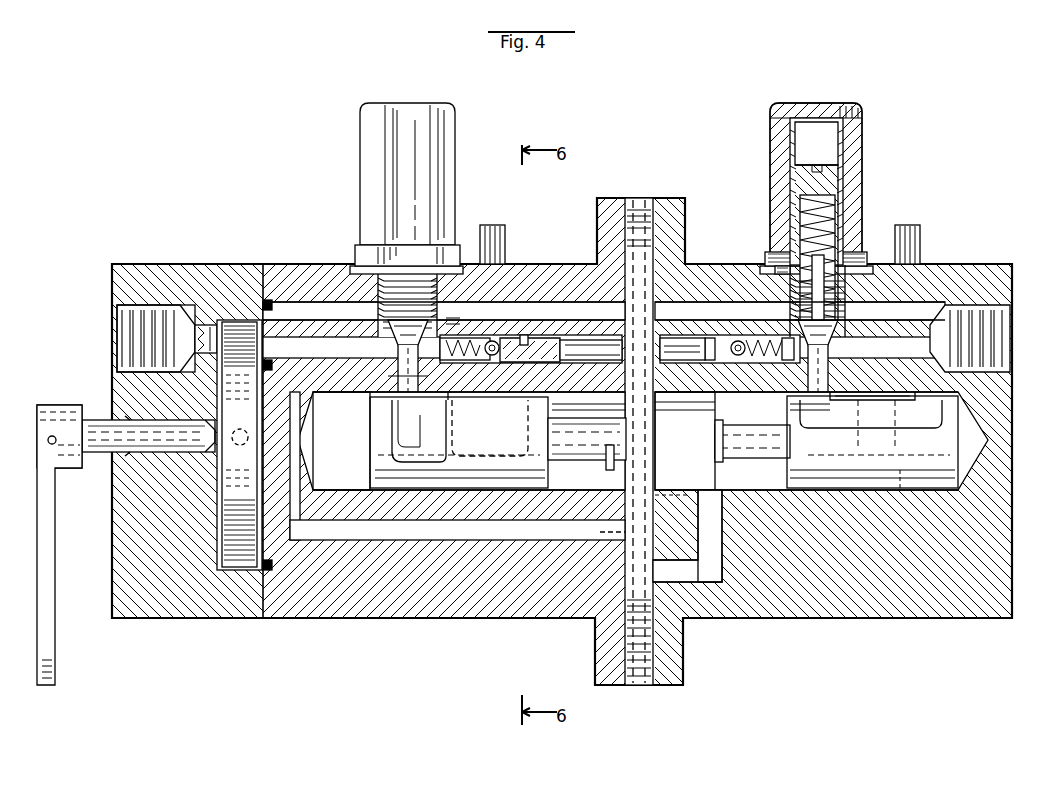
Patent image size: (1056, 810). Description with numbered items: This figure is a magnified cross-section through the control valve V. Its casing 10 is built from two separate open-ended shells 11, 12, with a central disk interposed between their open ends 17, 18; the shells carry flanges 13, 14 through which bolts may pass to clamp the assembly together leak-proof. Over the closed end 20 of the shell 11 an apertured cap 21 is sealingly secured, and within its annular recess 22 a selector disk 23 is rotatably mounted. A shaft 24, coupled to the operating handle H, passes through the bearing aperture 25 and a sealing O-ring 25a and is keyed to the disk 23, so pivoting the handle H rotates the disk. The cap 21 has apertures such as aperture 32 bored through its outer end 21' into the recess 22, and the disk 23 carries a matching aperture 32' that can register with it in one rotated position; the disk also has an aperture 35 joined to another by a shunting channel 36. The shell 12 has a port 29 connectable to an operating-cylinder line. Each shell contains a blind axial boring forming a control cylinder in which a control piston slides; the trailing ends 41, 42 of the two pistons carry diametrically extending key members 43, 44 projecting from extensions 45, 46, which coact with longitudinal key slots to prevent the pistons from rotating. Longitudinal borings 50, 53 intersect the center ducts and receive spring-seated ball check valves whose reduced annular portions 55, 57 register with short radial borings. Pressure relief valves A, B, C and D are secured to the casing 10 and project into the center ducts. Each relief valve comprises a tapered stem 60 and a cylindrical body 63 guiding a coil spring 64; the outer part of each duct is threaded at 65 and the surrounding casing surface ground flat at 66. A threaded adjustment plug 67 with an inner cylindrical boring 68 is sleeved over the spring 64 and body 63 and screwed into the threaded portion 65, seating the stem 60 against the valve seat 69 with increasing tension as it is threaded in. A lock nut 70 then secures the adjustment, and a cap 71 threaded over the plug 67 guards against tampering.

The casing 10 is at (150, 268).
The shell 11 is at (352, 622).
The shell 12 is at (895, 622).
The flange 13 is at (597, 657).
The flange 14 is at (681, 653).
The open end 17 is at (625, 200).
The open end 18 is at (668, 200).
The closed end 20 is at (262, 580).
The cap 21 is at (126, 629).
The outer end 21' is at (92, 549).
The annular recess 22 is at (222, 520).
The selector disk 23 is at (238, 540).
The shaft 24 is at (96, 424).
The bearing aperture 25 is at (175, 455).
The sealing O-ring 25a is at (128, 418).
The port 29 is at (985, 326).
The aperture 32 is at (133, 337).
The aperture 32' is at (219, 317).
The aperture 35 is at (218, 455).
The shunting channel 36 is at (240, 428).
The trailing end 41 is at (552, 492).
The trailing end 42 is at (785, 488).
The key member 43 is at (608, 472).
The key member 44 is at (722, 474).
The extension 45 is at (580, 452).
The extension 46 is at (746, 460).
The longitudinal boring 50 is at (580, 362).
The longitudinal boring 53 is at (680, 362).
The reduced annular portion 55 is at (525, 360).
The reduced annular portion 57 is at (712, 362).
The tapered stem 60 is at (398, 360).
The cylindrical body 63 is at (792, 284).
The coil spring 64 is at (790, 214).
The threaded portion 65 is at (380, 300).
The flat 66 is at (452, 274).
The adjustment plug 67 is at (380, 278).
The inner cylindrical boring 68 is at (850, 205).
The valve seat 69 is at (390, 326).
The lock nut 70 is at (360, 250).
The cap 71 is at (360, 158).
The pressure relief valve A is at (358, 125).
The pressure relief valve B is at (768, 128).
The pressure relief valve C is at (500, 230).
The pressure relief valve D is at (771, 441).
The control valve V is at (130, 158).
The operating handle H is at (37, 580).